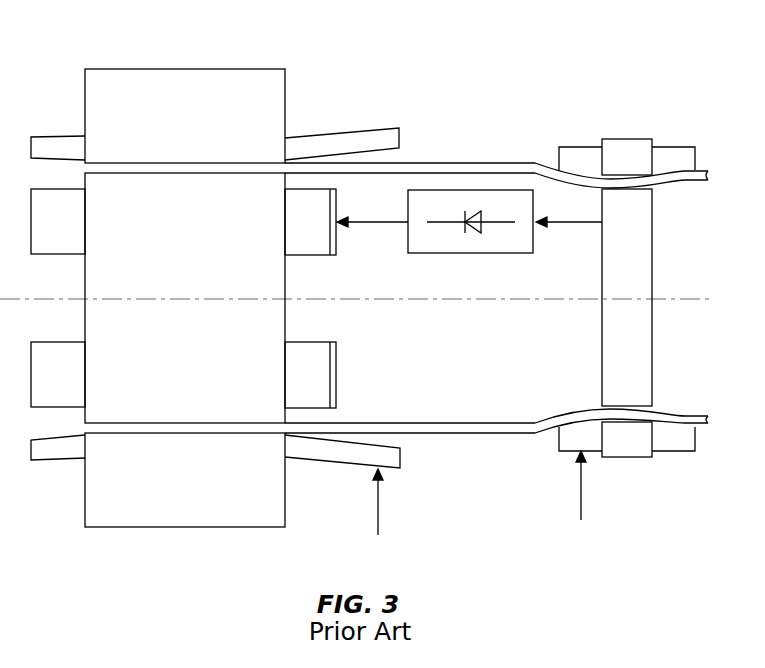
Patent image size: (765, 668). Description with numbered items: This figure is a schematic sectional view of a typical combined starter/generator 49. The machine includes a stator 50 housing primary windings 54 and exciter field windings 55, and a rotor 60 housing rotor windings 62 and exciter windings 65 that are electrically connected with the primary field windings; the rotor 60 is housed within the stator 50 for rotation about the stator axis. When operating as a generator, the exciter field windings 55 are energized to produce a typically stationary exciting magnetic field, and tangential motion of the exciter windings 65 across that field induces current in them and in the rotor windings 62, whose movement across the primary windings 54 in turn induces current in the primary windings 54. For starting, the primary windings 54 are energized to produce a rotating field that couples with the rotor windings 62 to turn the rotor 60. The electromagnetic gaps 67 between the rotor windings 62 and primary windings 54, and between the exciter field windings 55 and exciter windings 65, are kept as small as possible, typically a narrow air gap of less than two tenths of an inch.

The combined starter/generator 49 is at (575, 63).
The stator 50 is at (499, 88).
The primary windings 54 is at (197, 126).
The exciter field windings 55 is at (630, 145).
The rotor 60 is at (476, 371).
The rotor windings 62 is at (197, 246).
The exciter windings 65 is at (639, 247).
The electromagnetic gaps 67 is at (280, 168).